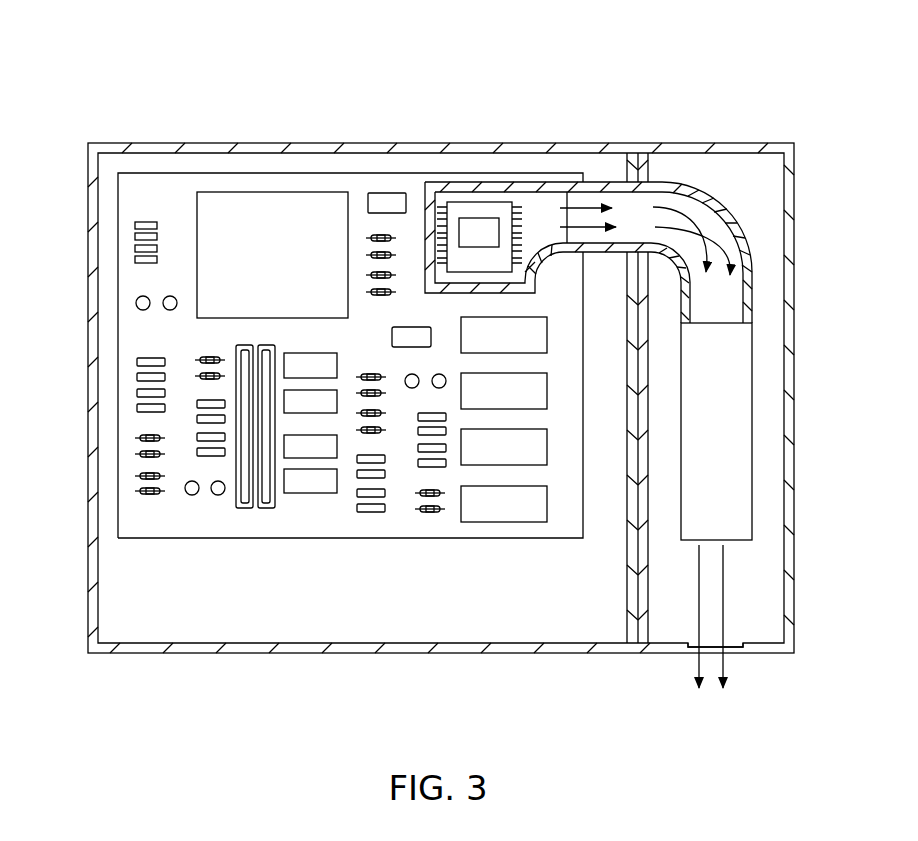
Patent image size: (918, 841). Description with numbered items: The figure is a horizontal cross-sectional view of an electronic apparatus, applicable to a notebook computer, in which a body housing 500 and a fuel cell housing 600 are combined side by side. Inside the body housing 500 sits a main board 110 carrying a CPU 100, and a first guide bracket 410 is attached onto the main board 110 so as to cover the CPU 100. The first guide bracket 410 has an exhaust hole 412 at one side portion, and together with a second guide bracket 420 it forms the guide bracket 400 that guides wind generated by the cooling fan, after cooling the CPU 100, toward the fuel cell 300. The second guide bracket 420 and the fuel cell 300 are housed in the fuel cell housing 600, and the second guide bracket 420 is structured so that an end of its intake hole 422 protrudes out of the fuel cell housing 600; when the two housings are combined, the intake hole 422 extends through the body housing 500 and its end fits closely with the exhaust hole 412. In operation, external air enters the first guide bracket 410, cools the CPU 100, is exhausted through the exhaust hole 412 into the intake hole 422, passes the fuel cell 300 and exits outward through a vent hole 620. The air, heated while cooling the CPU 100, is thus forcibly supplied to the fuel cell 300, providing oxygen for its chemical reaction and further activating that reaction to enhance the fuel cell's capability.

The CPU 100 is at (458, 200).
The main board 110 is at (133, 204).
The fuel cell 300 is at (727, 462).
The guide bracket 400 is at (640, 166).
The first guide bracket 410 is at (568, 200).
The exhaust hole 412 is at (542, 200).
The second guide bracket 420 is at (670, 183).
The intake hole 422 is at (733, 219).
The body housing 500 is at (317, 148).
The fuel cell housing 600 is at (792, 257).
The vent hole 620 is at (733, 650).